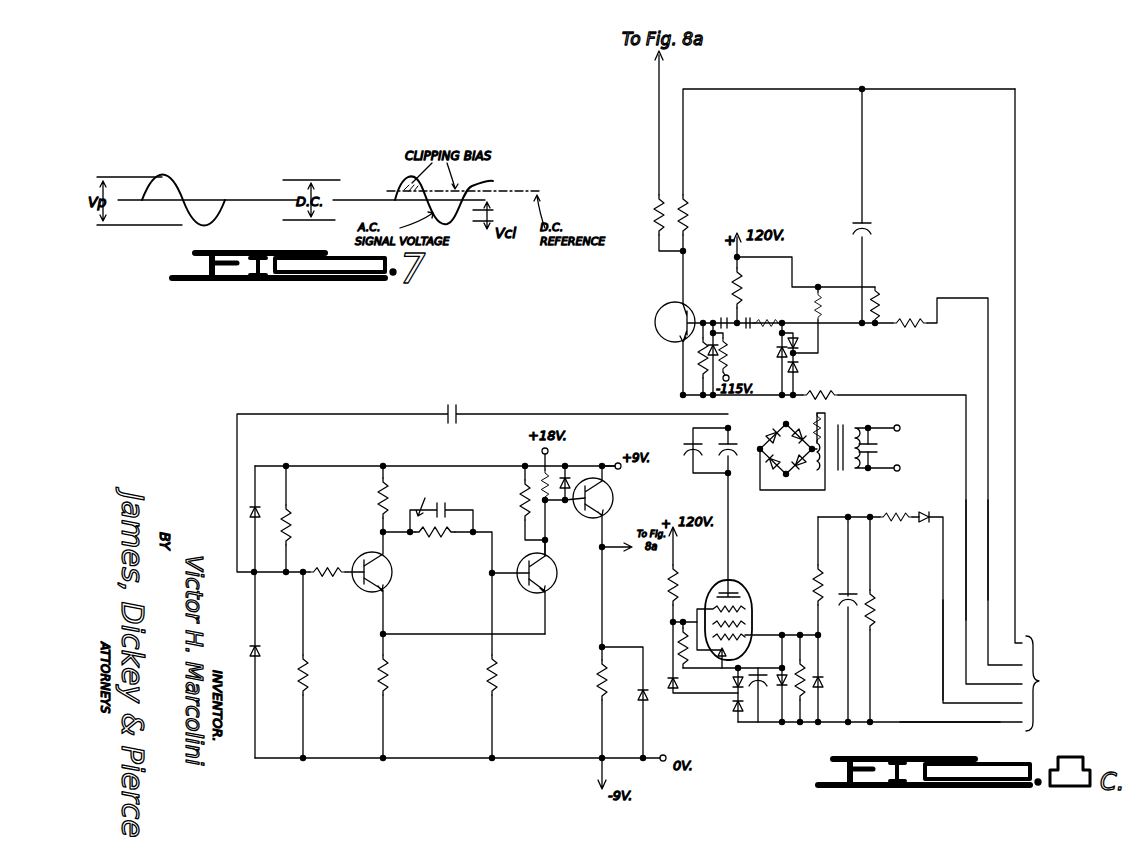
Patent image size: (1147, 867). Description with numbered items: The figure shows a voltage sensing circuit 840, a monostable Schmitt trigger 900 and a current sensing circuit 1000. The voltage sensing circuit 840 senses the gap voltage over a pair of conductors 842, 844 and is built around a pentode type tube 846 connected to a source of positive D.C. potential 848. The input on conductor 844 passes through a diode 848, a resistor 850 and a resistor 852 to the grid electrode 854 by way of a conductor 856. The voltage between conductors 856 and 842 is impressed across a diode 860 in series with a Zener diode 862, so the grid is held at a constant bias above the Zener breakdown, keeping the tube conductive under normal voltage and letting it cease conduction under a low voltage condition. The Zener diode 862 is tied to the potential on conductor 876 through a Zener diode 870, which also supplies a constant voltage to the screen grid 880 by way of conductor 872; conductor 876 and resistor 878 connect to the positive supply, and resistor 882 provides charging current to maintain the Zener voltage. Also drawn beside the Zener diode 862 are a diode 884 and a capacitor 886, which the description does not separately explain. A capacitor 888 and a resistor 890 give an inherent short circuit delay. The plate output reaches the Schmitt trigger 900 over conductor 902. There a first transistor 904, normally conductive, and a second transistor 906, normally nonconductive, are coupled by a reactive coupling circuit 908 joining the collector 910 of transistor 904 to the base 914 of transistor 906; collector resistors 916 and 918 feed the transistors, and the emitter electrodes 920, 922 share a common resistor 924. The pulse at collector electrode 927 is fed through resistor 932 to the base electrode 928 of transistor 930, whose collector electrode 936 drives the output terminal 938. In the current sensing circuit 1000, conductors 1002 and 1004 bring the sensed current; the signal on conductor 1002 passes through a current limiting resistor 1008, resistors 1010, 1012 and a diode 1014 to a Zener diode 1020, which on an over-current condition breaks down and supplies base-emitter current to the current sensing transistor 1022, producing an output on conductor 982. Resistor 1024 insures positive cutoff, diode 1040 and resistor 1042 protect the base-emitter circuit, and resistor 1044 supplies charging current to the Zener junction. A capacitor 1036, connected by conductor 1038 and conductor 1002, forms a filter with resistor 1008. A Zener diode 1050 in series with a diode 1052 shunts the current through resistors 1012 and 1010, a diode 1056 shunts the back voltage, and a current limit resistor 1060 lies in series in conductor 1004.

The input conductor 982 is at (661, 137).
The current sensing circuit 1000 is at (790, 194).
The Zener diode 1020 is at (688, 236).
The conductor 1038 is at (1017, 147).
The capacitor 1036 is at (872, 226).
The current sensing transistor 1022 is at (670, 305).
The resistor 1044 is at (742, 264).
The diode 1014 is at (744, 300).
The resistor 1010 is at (764, 320).
The resistor 1012 is at (818, 292).
The current limiting resistor 1008 is at (903, 318).
The current limit resistor 1060 is at (838, 398).
The diode 1040 is at (698, 347).
The resistor 1042 is at (708, 362).
The resistor 1024 is at (729, 357).
The diode 1056 is at (782, 352).
The diode 1052 is at (800, 347).
The Zener diode 1050 is at (800, 365).
The conductor 902 is at (318, 413).
The emitter electrode 920 is at (372, 592).
The collector 910 is at (370, 554).
The first transistor 904 is at (390, 568).
The collector resistor 916 is at (379, 493).
The common resistor 924 is at (390, 685).
The reactive coupling circuit 908 is at (422, 510).
The monostable circuit 900 is at (463, 601).
The base 914 is at (515, 578).
The second transistor 906 is at (547, 598).
The emitter electrode 922 is at (537, 597).
The collector resistor 918 is at (528, 496).
The collector electrode 927 is at (541, 505).
The base electrode 928 is at (585, 520).
The collector electrode 936 is at (613, 505).
The transistor 930 is at (622, 470).
The output terminal 938 is at (618, 545).
The resistor 932 is at (602, 575).
The conductor 876 is at (671, 560).
The resistor 878 is at (670, 585).
The conductor 872 is at (668, 620).
The resistor 882 is at (680, 650).
The Zener diode 870 is at (671, 692).
The pentode type tube 846 is at (722, 582).
The screen grid 880 is at (741, 597).
The diode 884 is at (733, 692).
The Zener diode 862 is at (740, 722).
The capacitor 886 is at (765, 693).
The conductor 856 is at (782, 665).
The grid electrode 854 is at (801, 660).
The resistor 852 is at (816, 566).
The diode 860 is at (815, 695).
The voltage sensing circuit 840 is at (890, 497).
The capacitor 888 is at (856, 598).
The resistor 890 is at (871, 612).
The conductor 844 is at (943, 650).
The conductor 842 is at (937, 724).
The conductor 1002 is at (989, 548).
The conductor 1004 is at (967, 590).
The diode 848 is at (812, 478).
The resistor 850 is at (890, 452).